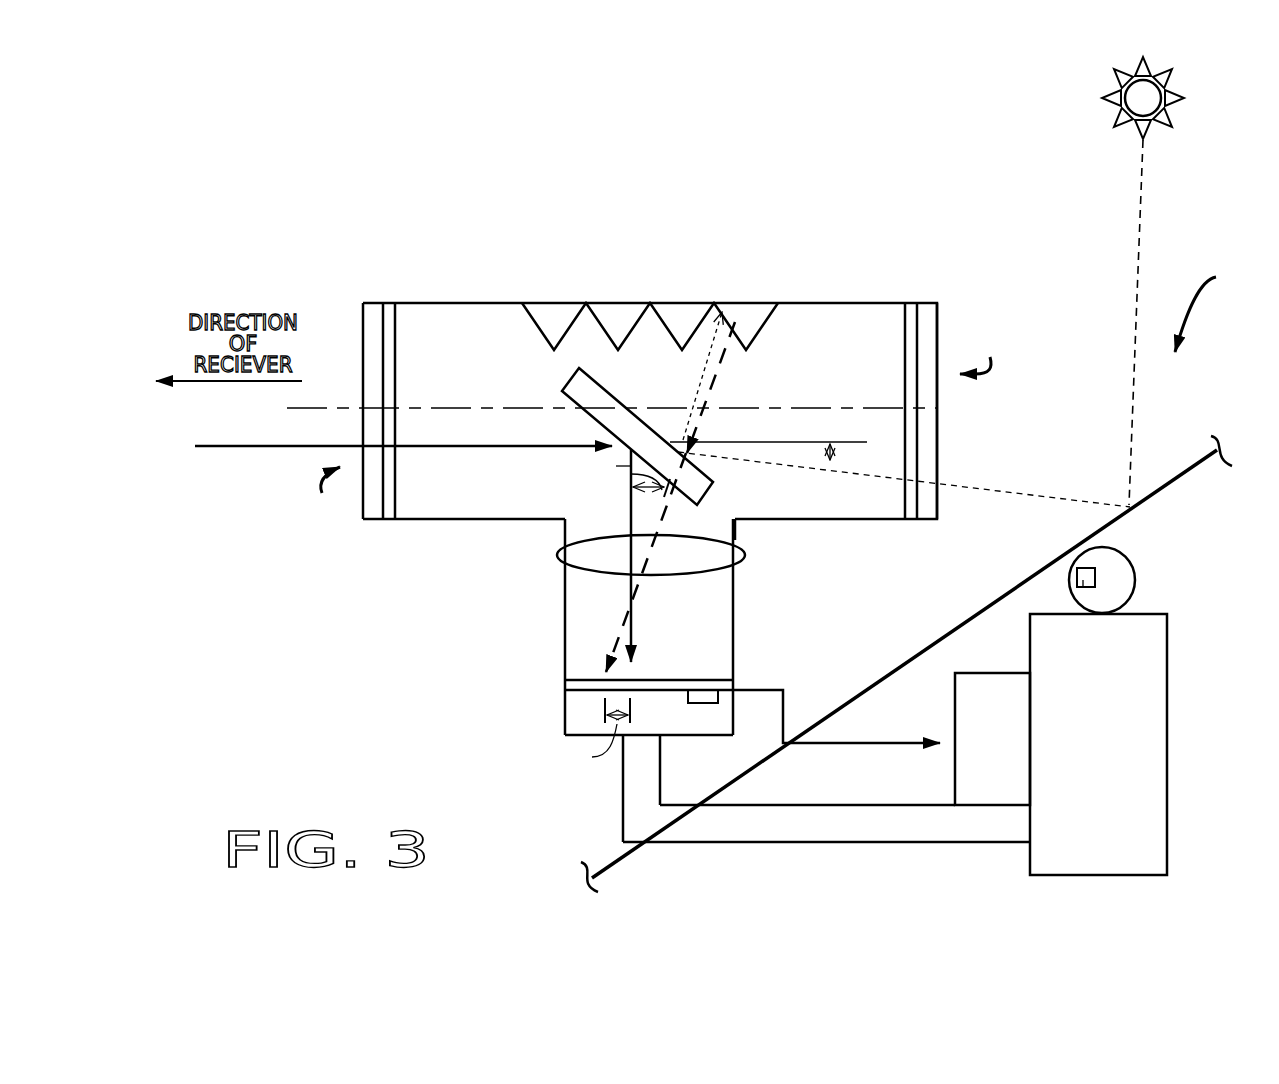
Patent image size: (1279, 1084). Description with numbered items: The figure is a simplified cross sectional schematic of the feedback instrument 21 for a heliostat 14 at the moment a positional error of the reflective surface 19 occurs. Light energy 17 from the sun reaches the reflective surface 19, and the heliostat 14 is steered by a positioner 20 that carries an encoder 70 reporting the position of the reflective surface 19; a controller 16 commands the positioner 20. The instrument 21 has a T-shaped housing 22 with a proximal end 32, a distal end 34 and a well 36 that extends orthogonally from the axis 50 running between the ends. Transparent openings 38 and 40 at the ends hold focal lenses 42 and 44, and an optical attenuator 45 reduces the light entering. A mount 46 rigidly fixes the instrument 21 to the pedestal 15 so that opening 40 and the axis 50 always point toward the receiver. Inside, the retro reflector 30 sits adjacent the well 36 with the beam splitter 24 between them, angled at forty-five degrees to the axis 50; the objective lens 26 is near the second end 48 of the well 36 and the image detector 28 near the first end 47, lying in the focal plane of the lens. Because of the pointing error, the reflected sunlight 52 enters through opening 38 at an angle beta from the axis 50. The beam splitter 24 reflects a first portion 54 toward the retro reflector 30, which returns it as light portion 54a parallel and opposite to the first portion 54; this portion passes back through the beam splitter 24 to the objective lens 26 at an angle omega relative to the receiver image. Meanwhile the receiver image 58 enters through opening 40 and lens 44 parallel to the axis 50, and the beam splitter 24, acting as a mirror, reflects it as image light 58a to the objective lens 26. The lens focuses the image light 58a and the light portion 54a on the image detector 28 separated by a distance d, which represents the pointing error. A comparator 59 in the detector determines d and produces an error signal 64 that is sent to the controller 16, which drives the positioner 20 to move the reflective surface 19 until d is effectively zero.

The heliostat 14 is at (1213, 307).
The pedestal 15 is at (1167, 821).
The controller 16 is at (968, 673).
The light energy 17 is at (1140, 253).
The reflective surface 19 is at (1190, 463).
The positioner 20 is at (1118, 580).
The instrument 21 is at (778, 258).
The housing 22 is at (860, 327).
The beam splitter 24 is at (700, 500).
The objective lens 26 is at (565, 548).
The image detector 28 is at (585, 693).
The retro reflector 30 is at (760, 328).
The proximal end 32 is at (888, 297).
The distal end 34 is at (408, 303).
The well 36 is at (735, 612).
The optically transparent opening 38 is at (980, 352).
The optically transparent opening 40 is at (326, 493).
The focal lens 42 is at (940, 313).
The focal lens 44 is at (362, 330).
The optical attenuator 45 is at (392, 369).
The mount 46 is at (820, 845).
The first end 47 is at (676, 740).
The second end 48 is at (738, 524).
The axis 50 is at (300, 410).
The reflected light 52 is at (1028, 493).
The first portion 54 is at (687, 333).
The light portion 54a is at (660, 525).
The receiver image 58 is at (288, 448).
The image light 58a is at (630, 645).
The comparator 59 is at (703, 703).
The error signal 64 is at (870, 745).
The encoder 70 is at (1082, 587).